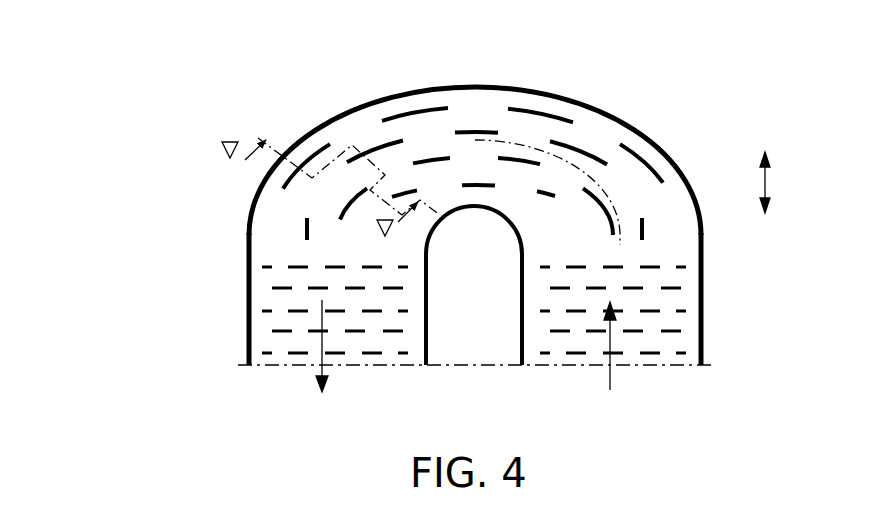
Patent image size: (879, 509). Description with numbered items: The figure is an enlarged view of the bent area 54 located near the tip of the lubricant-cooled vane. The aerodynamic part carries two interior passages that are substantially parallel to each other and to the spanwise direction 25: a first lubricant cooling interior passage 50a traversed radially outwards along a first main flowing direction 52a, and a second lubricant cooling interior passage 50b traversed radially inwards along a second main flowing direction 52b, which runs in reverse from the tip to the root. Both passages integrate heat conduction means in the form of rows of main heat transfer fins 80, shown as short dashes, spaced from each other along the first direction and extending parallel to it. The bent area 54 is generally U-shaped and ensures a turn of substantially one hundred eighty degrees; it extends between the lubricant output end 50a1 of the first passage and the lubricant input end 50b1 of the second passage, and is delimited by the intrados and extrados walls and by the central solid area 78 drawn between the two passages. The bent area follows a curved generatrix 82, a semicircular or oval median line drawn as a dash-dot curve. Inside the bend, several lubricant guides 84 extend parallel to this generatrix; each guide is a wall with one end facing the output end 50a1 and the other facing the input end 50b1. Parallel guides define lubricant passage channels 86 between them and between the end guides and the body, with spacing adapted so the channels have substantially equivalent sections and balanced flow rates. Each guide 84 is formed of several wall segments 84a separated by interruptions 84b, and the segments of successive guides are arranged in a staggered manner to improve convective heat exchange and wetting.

The spanwise direction 25 is at (768, 182).
The first lubricant cooling interior passage 50a is at (663, 297).
The end of the first passage 50a1 is at (668, 252).
The second lubricant cooling interior passage 50b is at (272, 277).
The end of the second interior passage 50b1 is at (262, 250).
The first main flowing direction 52a is at (612, 388).
The second main flowing direction 52b is at (322, 320).
The bent area 54 is at (672, 163).
The central solid area 78 is at (486, 279).
The main heat transfer fins 80 is at (337, 310).
The curved generatrix 82 is at (330, 205).
The lubricant guide 84 is at (380, 142).
The wall segments 84a is at (420, 153).
The interruptions 84b is at (525, 175).
The lubricant passage channels 86 is at (557, 107).